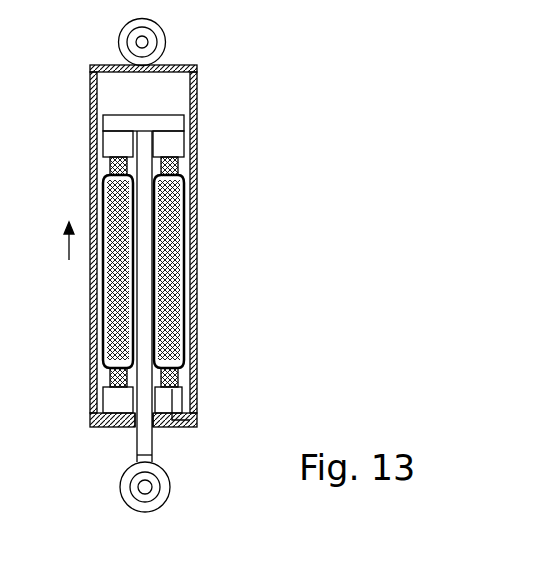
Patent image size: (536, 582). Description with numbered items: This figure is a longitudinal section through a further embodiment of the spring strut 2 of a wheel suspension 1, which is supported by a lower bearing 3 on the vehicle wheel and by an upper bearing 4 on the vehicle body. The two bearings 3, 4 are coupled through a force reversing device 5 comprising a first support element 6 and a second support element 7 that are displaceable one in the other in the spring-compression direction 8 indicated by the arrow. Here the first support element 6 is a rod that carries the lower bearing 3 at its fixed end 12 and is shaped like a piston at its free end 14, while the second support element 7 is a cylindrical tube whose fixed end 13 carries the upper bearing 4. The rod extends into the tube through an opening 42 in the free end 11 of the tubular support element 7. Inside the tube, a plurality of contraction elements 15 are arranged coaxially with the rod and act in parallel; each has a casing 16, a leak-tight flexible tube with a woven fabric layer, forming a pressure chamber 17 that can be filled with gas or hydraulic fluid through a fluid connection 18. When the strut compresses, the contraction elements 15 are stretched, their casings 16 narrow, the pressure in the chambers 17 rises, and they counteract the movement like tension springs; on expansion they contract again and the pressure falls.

The wheel suspension 1 is at (281, 49).
The spring strut 2 is at (175, 266).
The lower bearing 3 is at (152, 486).
The upper bearing 4 is at (148, 42).
The force reversing device 5 is at (210, 154).
The first support element 6 is at (148, 437).
The second support element 7 is at (197, 340).
The spring-compression direction 8 is at (68, 245).
The free end of the second support element 11 is at (103, 428).
The fixed end of the first support element 12 is at (150, 458).
The fixed end of the second support element 13 is at (170, 64).
The free end of the first support element 14 is at (112, 122).
The contraction element 15 is at (142, 285).
The casing 16 is at (110, 273).
The pressure chamber 17 is at (110, 302).
The fluid connection 18 is at (197, 422).
The opening 42 is at (132, 428).